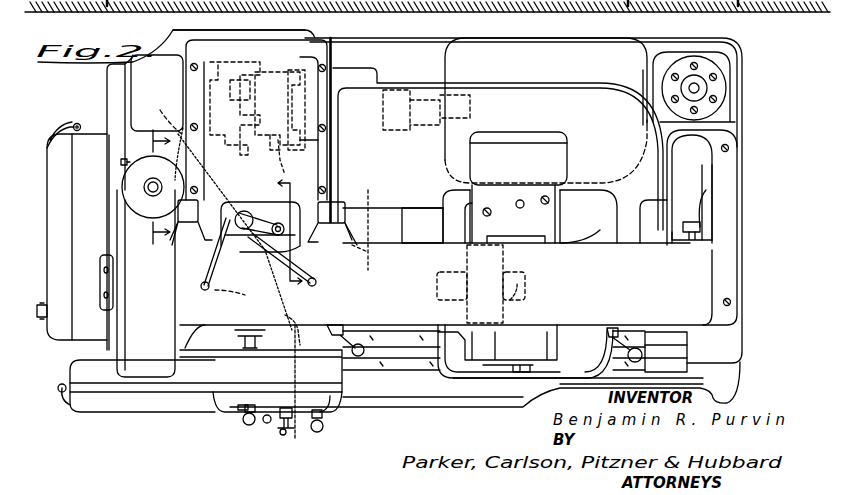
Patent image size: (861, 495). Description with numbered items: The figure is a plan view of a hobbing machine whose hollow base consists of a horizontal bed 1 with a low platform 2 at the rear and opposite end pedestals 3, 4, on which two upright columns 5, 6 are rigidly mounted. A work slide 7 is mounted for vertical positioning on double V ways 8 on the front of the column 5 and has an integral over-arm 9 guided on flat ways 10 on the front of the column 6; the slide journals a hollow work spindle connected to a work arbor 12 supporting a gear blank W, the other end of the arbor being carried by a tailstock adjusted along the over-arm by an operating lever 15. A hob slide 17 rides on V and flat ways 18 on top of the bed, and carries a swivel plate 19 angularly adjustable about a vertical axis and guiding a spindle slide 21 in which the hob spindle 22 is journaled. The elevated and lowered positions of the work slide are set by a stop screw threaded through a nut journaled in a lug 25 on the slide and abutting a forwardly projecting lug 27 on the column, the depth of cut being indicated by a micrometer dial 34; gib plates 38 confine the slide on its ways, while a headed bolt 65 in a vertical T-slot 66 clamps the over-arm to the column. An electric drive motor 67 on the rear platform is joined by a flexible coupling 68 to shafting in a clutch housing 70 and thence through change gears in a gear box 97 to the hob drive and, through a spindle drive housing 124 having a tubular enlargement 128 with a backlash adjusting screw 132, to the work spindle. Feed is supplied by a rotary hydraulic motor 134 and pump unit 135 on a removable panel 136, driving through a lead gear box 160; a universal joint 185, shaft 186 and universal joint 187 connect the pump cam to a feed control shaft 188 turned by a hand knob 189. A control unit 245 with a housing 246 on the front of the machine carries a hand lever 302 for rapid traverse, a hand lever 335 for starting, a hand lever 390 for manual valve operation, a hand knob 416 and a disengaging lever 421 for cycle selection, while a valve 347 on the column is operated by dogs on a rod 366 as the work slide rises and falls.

The horizontal bed 1 is at (729, 380).
The low platform 2 is at (424, 48).
The end pedestal 3 is at (116, 90).
The end pedestal 4 is at (725, 130).
The upright column 5 is at (310, 88).
The upright column 6 is at (700, 171).
The work slide 7 is at (190, 306).
The double V ways 8 is at (312, 226).
The over-arm 9 is at (408, 232).
The flat ways 10 is at (712, 236).
The work arbor 12 is at (525, 279).
The operating lever 15 is at (636, 350).
The hob slide 17 is at (465, 375).
The V and flat ways 18 is at (698, 346).
The swivel plate 19 is at (580, 206).
The spindle slide 21 is at (545, 218).
The hob spindle 22 is at (524, 236).
The lug 25 is at (258, 268).
The forwardly projecting lug 27 is at (276, 202).
The micrometer dial 34 is at (268, 330).
The gib plates 38 is at (178, 248).
The headed bolt 65 is at (700, 228).
The vertical T-slot 66 is at (712, 192).
The electric drive motor 67 is at (619, 50).
The flexible coupling 68 is at (419, 180).
The clutch housing 70 is at (365, 262).
The gear box 97 is at (86, 138).
The spindle drive housing 124 is at (148, 368).
The tubular enlargement 128 is at (125, 182).
The adjusting screw 132 is at (121, 163).
The rotary hydraulic motor 134 is at (212, 53).
The pump unit 135 is at (280, 142).
The removable panel 136 is at (292, 31).
The lead gear box 160 is at (92, 400).
The universal joint 185 is at (177, 117).
The shaft 186 is at (232, 297).
The universal joint 187 is at (300, 315).
The feed control shaft 188 is at (305, 375).
The hand knob 189 is at (302, 406).
The control unit 245 is at (224, 445).
The housing 246 is at (334, 412).
The hand lever 302 is at (248, 428).
The hand lever 335 is at (323, 430).
The valve 347 is at (240, 212).
The rod 366 is at (280, 252).
The hand lever 390 is at (289, 437).
The hand knob 416 is at (240, 418).
The disengaging lever 421 is at (268, 425).
The gear blank W is at (503, 258).